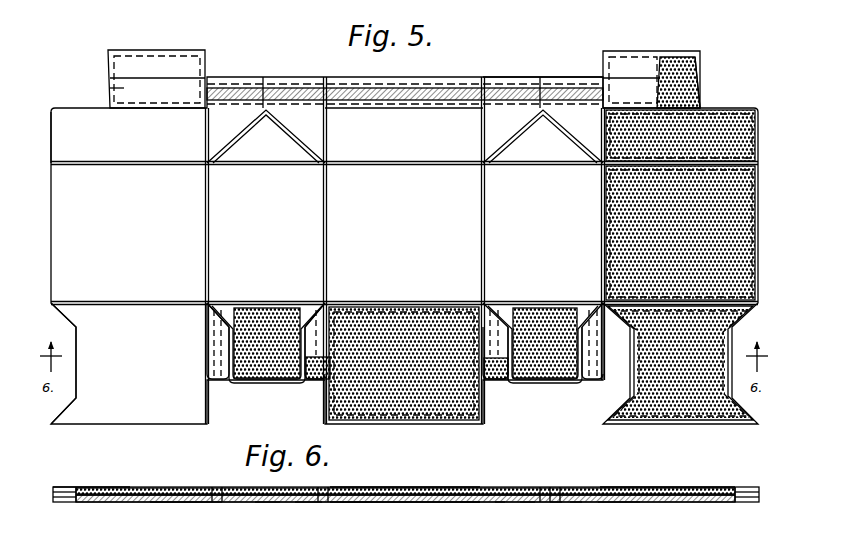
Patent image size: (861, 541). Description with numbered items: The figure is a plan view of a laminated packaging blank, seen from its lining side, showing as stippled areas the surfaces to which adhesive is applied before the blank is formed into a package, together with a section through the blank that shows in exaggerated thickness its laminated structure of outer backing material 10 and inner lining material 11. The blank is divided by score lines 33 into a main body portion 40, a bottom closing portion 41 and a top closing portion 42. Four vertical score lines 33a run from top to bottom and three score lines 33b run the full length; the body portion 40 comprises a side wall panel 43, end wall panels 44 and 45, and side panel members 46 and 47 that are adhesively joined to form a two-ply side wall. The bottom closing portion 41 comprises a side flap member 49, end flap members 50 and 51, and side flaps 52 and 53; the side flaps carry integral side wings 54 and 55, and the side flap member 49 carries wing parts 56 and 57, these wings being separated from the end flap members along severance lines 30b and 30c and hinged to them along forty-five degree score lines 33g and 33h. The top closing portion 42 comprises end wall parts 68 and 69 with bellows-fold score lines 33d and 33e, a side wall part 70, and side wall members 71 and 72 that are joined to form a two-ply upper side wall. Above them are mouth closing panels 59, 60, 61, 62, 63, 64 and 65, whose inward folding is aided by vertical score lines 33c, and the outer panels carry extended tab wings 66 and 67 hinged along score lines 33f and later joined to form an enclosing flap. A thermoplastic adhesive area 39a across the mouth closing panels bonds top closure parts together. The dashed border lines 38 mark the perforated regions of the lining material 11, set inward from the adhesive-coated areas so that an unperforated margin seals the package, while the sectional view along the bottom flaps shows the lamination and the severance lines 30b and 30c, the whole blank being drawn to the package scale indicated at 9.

In FIG. 6, the container blank cross-section 9 is at (690, 487).
In FIG. 6, the backing material 10 is at (152, 503).
In FIG. 6, the lining material 11 is at (150, 490).
In FIG. 5, the severance line 30b is at (240, 383).
In FIG. 6, the severance line 30b is at (218, 487).
In FIG. 5, the severance line 30c is at (580, 384).
In FIG. 6, the severance line 30c is at (532, 487).
In FIG. 5, the score lines 33 is at (210, 177).
In FIG. 5, the vertical score lines 33a is at (206, 230).
In FIG. 6, the vertical score lines 33a is at (206, 504).
In FIG. 5, the longitudinal score lines 33b is at (401, 111).
In FIG. 6, the longitudinal score lines 33b is at (412, 487).
In FIG. 5, the vertical score lines 33c is at (283, 84).
In FIG. 6, the vertical score lines 33c is at (262, 504).
In FIG. 5, the angular score line 33d is at (512, 140).
In FIG. 6, the angular score line 33d is at (271, 505).
In FIG. 5, the angular score line 33e is at (572, 140).
In FIG. 6, the angular score line 33e is at (302, 505).
In FIG. 5, the score lines 33f is at (170, 78).
In FIG. 5, the angular score line 33g is at (214, 322).
In FIG. 6, the angular score line 33g is at (218, 504).
In FIG. 5, the angular score line 33h is at (310, 303).
In FIG. 6, the angular score line 33h is at (313, 504).
In FIG. 5, the border lines 38 is at (608, 235).
In FIG. 5, the thermoplastic adhesive area 39a is at (440, 94).
In FIG. 5, the main body portion 40 is at (50, 230).
In FIG. 5, the bottom closing portion 41 is at (58, 407).
In FIG. 5, the top closing portion 42 is at (50, 143).
In FIG. 5, the side wall panel 43 is at (404, 233).
In FIG. 5, the end wall panel 44 is at (266, 233).
In FIG. 5, the end wall panel 45 is at (543, 233).
In FIG. 5, the side panel member 46 is at (129, 233).
In FIG. 5, the side panel member 47 is at (680, 233).
In FIG. 5, the side flap member 49 is at (430, 424).
In FIG. 6, the side flap member 49 is at (450, 487).
In FIG. 5, the end flap member 50 is at (282, 383).
In FIG. 5, the end flap member 51 is at (536, 383).
In FIG. 5, the side flap 52 is at (129, 363).
In FIG. 6, the side flap 52 is at (96, 489).
In FIG. 5, the side flap 53 is at (690, 424).
In FIG. 6, the side flap 53 is at (646, 487).
In FIG. 5, the side wing 54 is at (212, 391).
In FIG. 5, the side wing 55 is at (593, 384).
In FIG. 5, the wing part 56 is at (318, 383).
In FIG. 5, the wing part 57 is at (490, 384).
In FIG. 5, the mouth closing panel 59 is at (116, 88).
In FIG. 5, the mouth closing panel 60 is at (234, 78).
In FIG. 5, the mouth closing panel 61 is at (325, 78).
In FIG. 5, the mouth closing panel 62 is at (412, 79).
In FIG. 5, the mouth closing panel 63 is at (520, 79).
In FIG. 5, the mouth closing panel 64 is at (586, 77).
In FIG. 5, the mouth closing panel 65 is at (700, 88).
In FIG. 5, the tab wing 66 is at (127, 50).
In FIG. 5, the tab wing 67 is at (688, 57).
In FIG. 5, the end wall part 68 is at (266, 136).
In FIG. 5, the end wall part 69 is at (543, 136).
In FIG. 5, the side wall part 70 is at (404, 135).
In FIG. 5, the side wall member 71 is at (129, 135).
In FIG. 5, the side wall member 72 is at (758, 143).